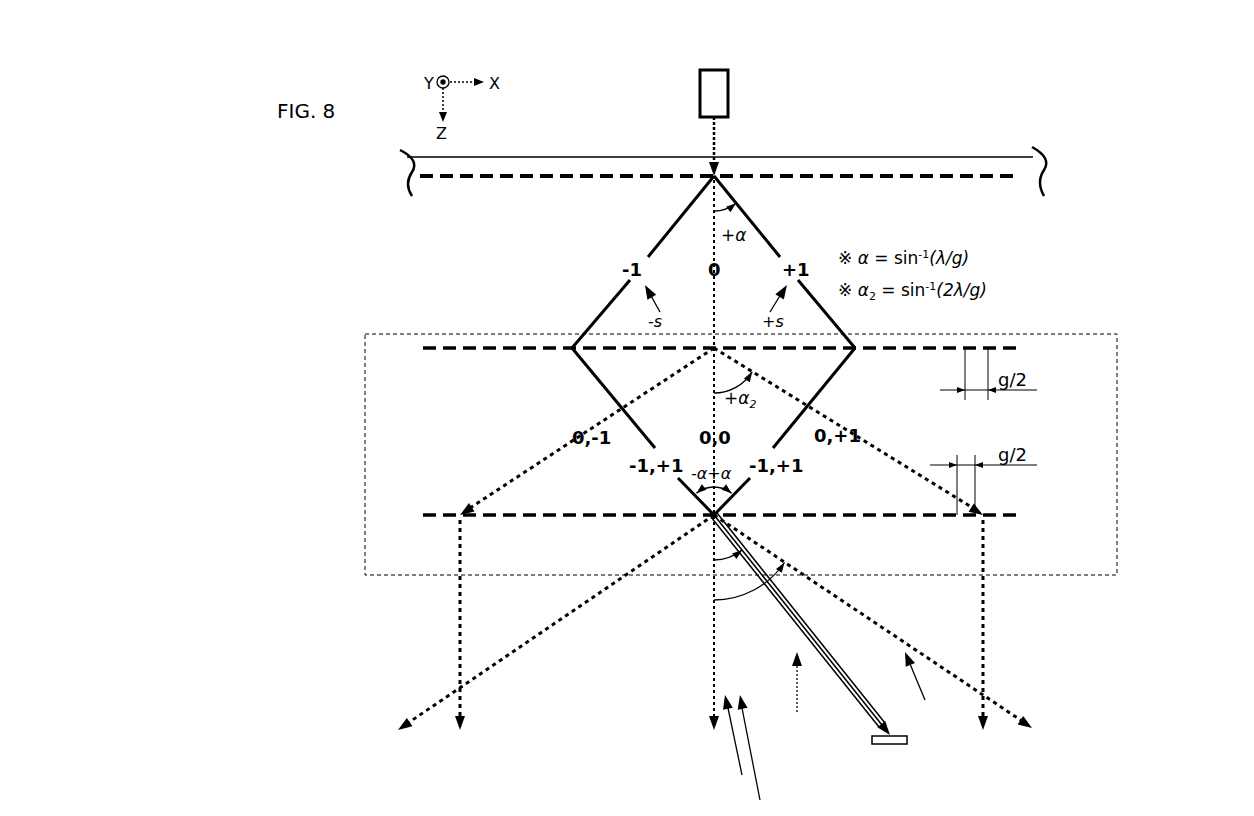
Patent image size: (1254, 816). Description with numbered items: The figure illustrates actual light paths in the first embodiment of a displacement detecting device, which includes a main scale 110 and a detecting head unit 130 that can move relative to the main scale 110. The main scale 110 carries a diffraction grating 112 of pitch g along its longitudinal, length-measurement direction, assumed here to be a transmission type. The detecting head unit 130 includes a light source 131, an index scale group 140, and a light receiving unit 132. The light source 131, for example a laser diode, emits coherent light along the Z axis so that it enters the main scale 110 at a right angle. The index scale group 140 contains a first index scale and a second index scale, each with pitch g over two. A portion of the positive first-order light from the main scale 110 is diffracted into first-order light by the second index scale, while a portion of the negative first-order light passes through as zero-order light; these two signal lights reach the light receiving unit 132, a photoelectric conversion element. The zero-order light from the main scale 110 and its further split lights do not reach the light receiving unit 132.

The main scale 110 is at (522, 157).
The diffraction grating 112 is at (508, 180).
The detecting head unit 130 is at (1105, 640).
The light source 131 is at (729, 86).
The light receiving unit 132 is at (897, 745).
The index scale group 140 is at (1108, 521).